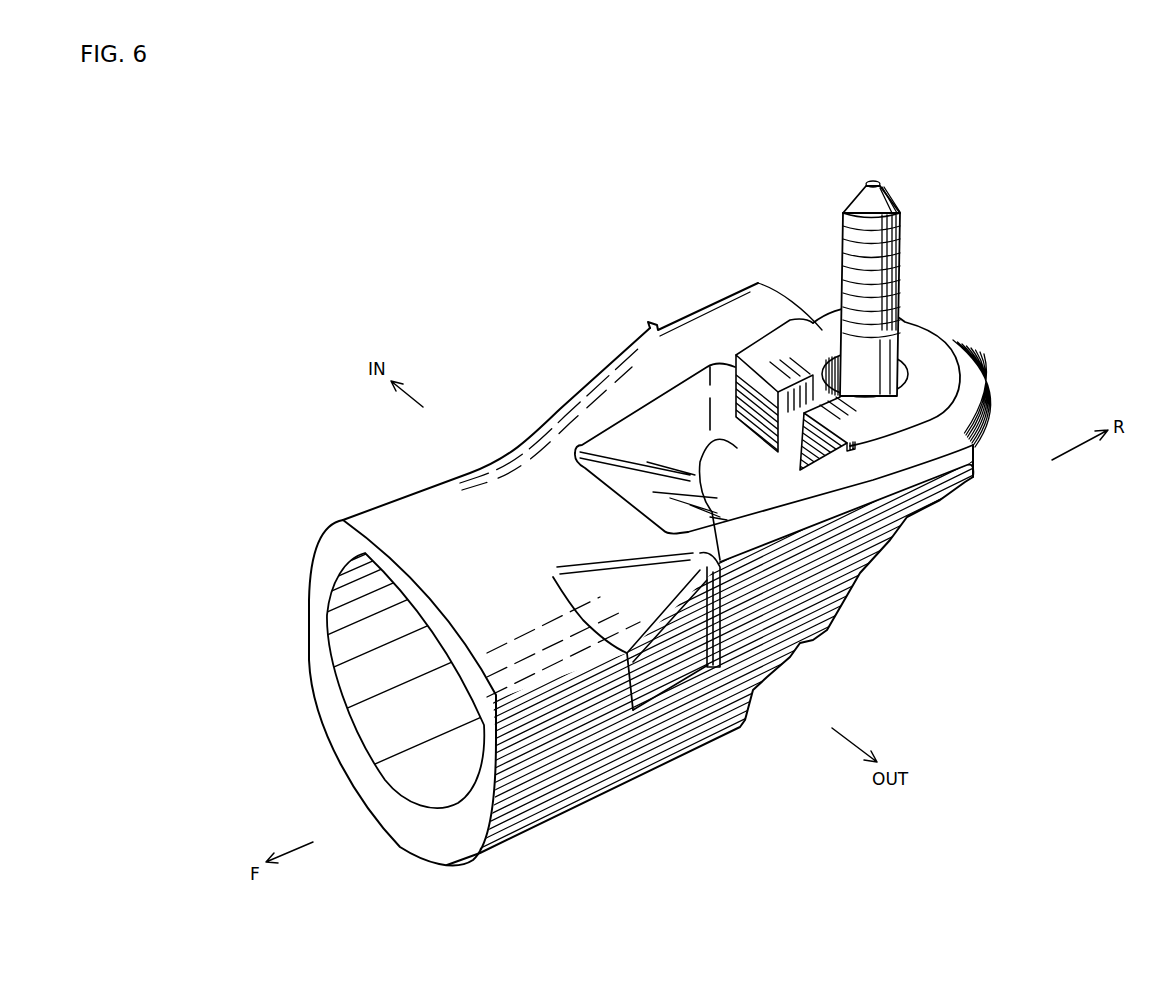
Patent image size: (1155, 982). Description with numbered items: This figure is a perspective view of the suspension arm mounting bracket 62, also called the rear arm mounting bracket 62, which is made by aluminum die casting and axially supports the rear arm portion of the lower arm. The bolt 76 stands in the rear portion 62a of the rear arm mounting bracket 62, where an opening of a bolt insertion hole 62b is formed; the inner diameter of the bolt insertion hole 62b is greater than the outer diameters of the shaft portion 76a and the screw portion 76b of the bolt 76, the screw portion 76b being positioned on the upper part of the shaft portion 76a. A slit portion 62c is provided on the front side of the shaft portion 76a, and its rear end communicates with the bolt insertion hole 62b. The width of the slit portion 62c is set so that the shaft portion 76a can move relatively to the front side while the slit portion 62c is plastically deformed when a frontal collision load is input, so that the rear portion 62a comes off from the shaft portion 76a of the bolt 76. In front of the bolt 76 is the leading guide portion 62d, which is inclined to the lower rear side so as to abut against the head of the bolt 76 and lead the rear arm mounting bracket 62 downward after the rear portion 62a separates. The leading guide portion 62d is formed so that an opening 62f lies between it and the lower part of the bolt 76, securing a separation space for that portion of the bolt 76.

The suspension arm mounting bracket 62 is at (650, 575).
The rear portion 62a is at (945, 343).
The bolt insertion hole 62b is at (907, 357).
The slit portion 62c is at (716, 450).
The leading guide portion 62d is at (640, 487).
The opening 62f is at (750, 478).
The bolt 76 is at (842, 250).
The shaft portion 76a is at (855, 358).
The screw portion 76b is at (895, 221).